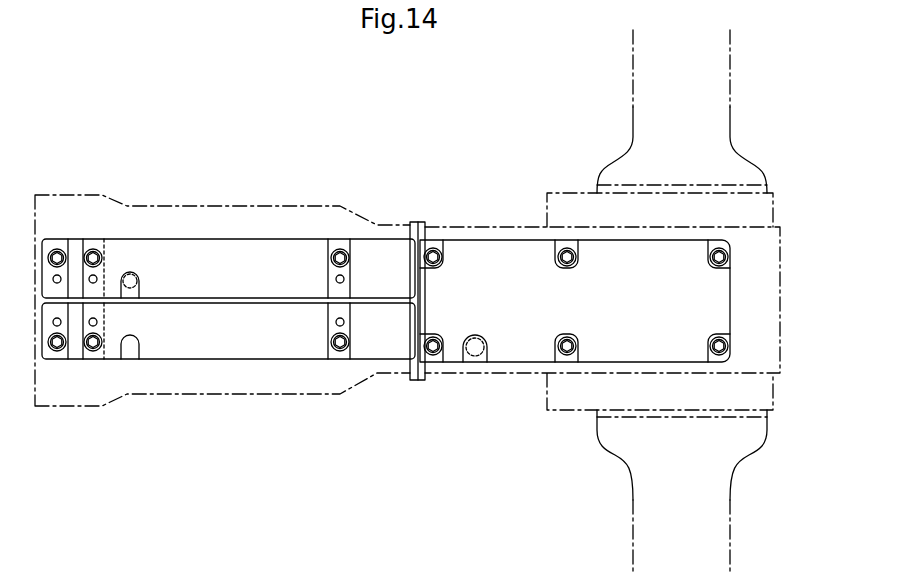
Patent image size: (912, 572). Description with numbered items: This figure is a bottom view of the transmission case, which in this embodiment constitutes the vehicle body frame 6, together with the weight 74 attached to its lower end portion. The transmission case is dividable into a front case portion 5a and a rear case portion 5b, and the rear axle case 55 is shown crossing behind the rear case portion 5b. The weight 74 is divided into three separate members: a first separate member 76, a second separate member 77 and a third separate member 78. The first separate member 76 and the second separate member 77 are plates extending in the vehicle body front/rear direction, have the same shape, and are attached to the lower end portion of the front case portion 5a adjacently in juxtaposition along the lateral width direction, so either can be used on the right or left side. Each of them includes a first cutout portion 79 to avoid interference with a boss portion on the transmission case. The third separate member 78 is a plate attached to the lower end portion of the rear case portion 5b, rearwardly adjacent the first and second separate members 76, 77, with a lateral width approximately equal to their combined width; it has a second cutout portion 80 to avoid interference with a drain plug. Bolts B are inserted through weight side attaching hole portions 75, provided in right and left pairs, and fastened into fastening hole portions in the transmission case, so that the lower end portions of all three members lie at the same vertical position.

The front case portion 5a is at (184, 202).
The rear case portion 5b is at (462, 225).
The vehicle body frame 6 is at (303, 146).
The rear axle case 55 is at (633, 72).
The weight 74 is at (398, 221).
The weight side attaching hole portions 75 is at (98, 277).
The first separate member 76 is at (231, 252).
The second separate member 77 is at (228, 353).
The third separate member 78 is at (523, 345).
The first cutout portion 79 is at (131, 294).
The second cutout portion 80 is at (483, 353).
The bolts B is at (93, 252).